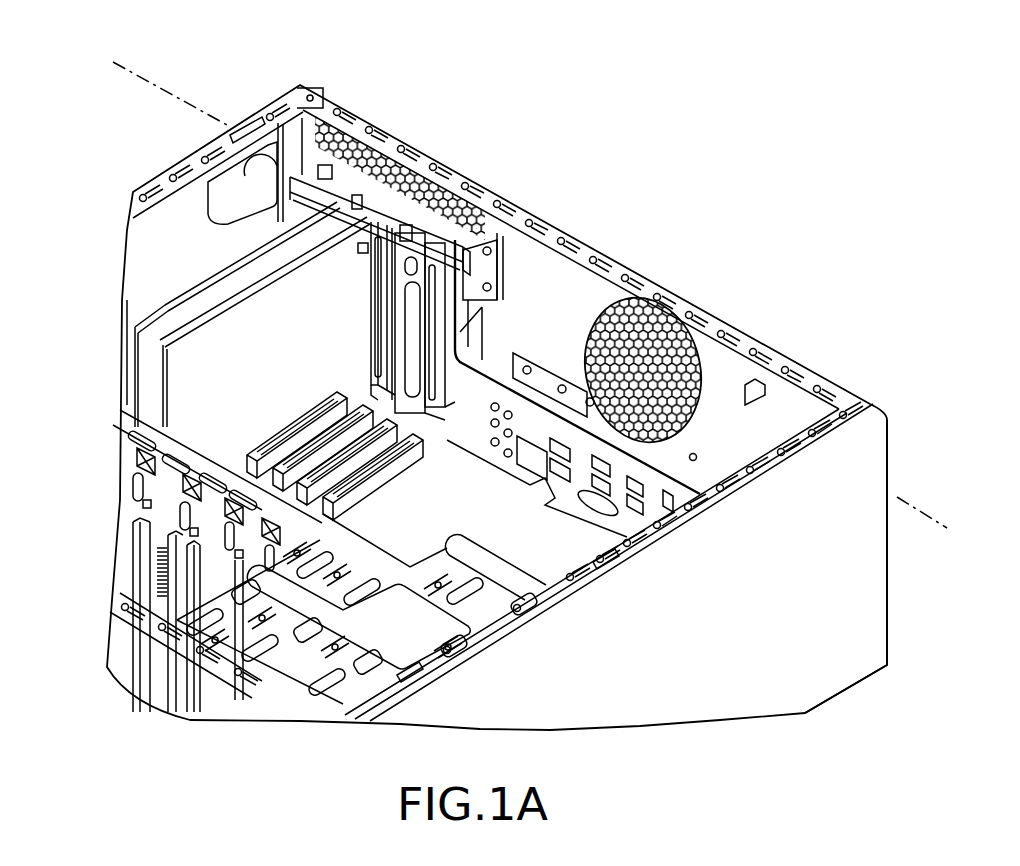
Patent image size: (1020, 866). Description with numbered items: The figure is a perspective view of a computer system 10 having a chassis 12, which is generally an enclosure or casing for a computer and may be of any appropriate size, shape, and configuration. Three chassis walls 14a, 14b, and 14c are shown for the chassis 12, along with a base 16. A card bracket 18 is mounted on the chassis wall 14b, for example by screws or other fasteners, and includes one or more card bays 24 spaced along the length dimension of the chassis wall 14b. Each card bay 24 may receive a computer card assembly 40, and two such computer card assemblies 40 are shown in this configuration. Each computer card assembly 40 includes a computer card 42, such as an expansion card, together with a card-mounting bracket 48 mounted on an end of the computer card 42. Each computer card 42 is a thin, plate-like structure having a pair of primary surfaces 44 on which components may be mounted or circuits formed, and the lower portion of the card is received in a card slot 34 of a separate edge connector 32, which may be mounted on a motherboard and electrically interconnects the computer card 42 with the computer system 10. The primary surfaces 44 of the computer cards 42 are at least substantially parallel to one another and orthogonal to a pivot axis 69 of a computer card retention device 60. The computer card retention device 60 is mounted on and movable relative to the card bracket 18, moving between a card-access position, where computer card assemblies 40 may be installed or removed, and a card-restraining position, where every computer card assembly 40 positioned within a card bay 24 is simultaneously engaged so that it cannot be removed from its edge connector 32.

The computer system 10 is at (762, 136).
The chassis 12 is at (510, 168).
The chassis wall 14a is at (767, 606).
The chassis wall 14b is at (568, 335).
The chassis wall 14c is at (186, 255).
The base 16 is at (530, 546).
The card bracket 18 is at (467, 297).
The card bay 24 is at (387, 317).
The edge connector 32 is at (387, 480).
The card slot 34 is at (410, 455).
The computer card assembly 40 is at (160, 337).
The computer card 42 is at (162, 388).
The primary surface 44 is at (252, 270).
The card-mounting bracket 48 is at (358, 247).
The computer card retention device 60 is at (407, 207).
The pivot axis 69 is at (163, 90).